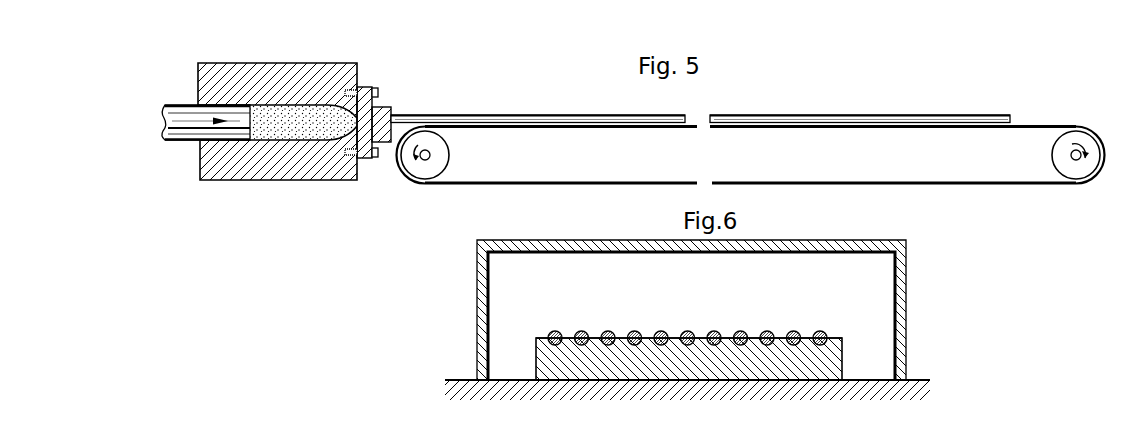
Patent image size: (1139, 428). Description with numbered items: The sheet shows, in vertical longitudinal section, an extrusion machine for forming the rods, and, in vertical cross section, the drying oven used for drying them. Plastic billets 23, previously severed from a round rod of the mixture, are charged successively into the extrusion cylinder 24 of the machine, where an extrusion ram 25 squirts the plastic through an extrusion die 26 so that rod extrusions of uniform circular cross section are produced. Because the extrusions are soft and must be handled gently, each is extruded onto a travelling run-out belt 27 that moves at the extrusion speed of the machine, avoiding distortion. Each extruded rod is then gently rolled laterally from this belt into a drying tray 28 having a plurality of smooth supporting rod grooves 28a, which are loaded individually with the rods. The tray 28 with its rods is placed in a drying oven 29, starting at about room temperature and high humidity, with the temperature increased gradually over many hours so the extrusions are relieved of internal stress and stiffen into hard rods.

In FIG. 5, the billets 23 is at (277, 108).
In FIG. 5, the extrusion cylinder 24 is at (277, 181).
In FIG. 5, the extrusion ram 25 is at (185, 142).
In FIG. 5, the extrusion die 26 is at (380, 104).
In FIG. 5, the run-out belt 27 is at (725, 116).
In FIG. 6, the run-out belt 27 is at (740, 331).
In FIG. 6, the drying tray 28 is at (843, 360).
In FIG. 6, the supporting rod grooves 28a is at (556, 350).
In FIG. 6, the drying oven 29 is at (908, 290).